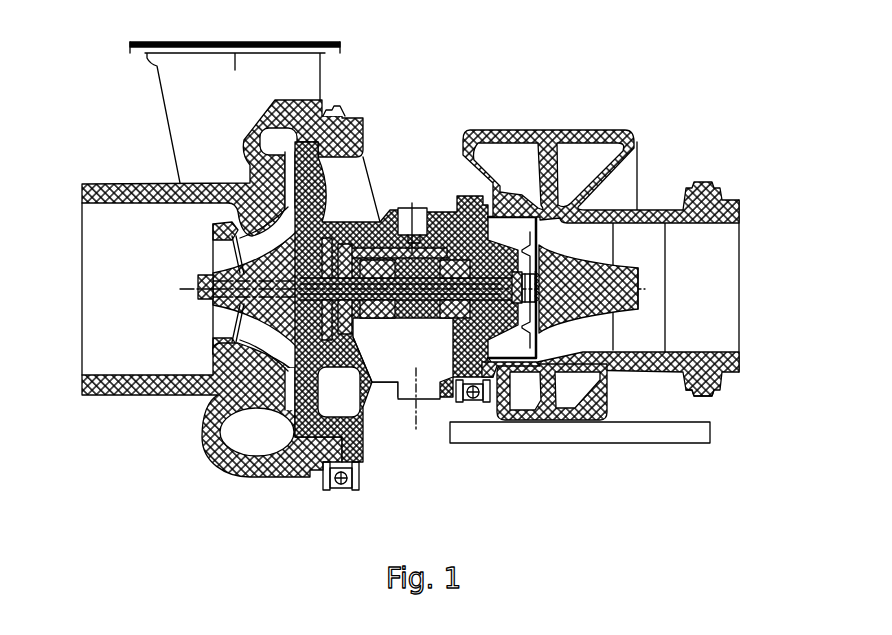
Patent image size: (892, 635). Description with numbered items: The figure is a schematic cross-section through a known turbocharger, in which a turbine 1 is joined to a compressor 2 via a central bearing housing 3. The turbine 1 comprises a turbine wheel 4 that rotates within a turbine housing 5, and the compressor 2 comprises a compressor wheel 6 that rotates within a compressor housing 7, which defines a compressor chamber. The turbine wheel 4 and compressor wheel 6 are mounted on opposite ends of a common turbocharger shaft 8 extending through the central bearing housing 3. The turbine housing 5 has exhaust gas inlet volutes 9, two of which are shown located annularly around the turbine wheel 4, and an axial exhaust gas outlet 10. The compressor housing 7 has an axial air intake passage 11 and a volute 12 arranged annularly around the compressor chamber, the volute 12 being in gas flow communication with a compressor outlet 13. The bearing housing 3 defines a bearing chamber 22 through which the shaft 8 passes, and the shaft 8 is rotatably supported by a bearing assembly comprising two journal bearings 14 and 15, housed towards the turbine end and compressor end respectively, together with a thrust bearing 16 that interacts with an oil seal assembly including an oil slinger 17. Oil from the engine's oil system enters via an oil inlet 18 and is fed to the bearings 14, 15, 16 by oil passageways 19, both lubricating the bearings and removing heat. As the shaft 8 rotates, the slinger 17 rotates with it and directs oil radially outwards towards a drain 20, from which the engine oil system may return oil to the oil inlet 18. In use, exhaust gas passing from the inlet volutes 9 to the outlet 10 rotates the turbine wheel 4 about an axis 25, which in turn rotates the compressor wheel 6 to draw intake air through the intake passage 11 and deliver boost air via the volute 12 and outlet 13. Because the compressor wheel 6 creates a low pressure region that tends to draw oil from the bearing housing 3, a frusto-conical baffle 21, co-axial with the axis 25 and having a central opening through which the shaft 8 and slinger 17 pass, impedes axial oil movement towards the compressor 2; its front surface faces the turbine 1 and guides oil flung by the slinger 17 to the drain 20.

The turbine 1 is at (597, 100).
The compressor 2 is at (120, 422).
The central bearing housing 3 is at (396, 179).
The turbine wheel 4 is at (577, 300).
The turbine housing 5 is at (698, 385).
The compressor wheel 6 is at (250, 274).
The compressor housing 7 is at (213, 188).
The turbocharger shaft 8 is at (473, 398).
The exhaust gas inlet volute 9 is at (573, 153).
The axial exhaust gas outlet 10 is at (655, 242).
The axial air intake passage 11 is at (108, 228).
The volute 12 is at (270, 140).
The compressor outlet 13 is at (180, 78).
The journal bearing 14 is at (486, 345).
The journal bearing 15 is at (383, 313).
The thrust bearing 16 is at (350, 250).
The oil slinger 17 is at (318, 305).
The oil inlet 18 is at (418, 222).
The oil passageways 19 is at (403, 358).
The drain 20 is at (427, 365).
The baffle 21 is at (373, 343).
The bearing chamber 22 is at (460, 315).
The axis 25 is at (627, 302).